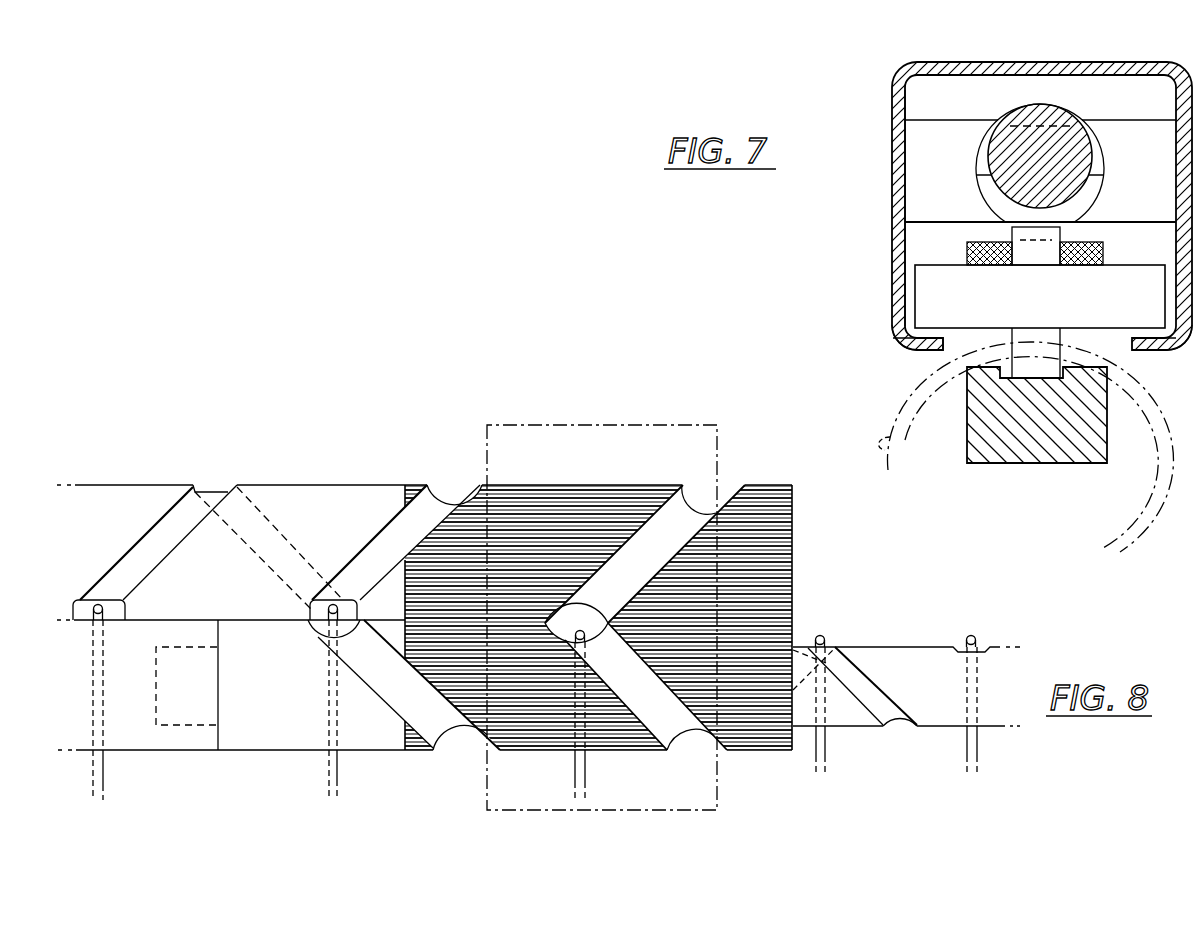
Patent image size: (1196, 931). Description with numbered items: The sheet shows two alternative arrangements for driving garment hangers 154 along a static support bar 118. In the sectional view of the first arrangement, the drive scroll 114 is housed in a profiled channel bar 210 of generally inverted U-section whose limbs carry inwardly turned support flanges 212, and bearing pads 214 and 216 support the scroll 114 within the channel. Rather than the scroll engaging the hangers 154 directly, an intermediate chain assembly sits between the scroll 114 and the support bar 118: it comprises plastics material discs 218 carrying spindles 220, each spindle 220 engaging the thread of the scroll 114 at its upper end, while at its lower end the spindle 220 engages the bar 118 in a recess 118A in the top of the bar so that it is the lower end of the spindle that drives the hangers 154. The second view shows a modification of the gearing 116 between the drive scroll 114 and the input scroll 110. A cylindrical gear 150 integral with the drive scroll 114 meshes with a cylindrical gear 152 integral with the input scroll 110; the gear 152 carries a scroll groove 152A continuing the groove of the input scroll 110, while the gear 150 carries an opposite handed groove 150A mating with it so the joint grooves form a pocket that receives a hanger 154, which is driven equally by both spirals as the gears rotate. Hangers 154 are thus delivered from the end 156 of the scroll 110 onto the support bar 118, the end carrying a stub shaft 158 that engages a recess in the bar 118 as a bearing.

In FIG. 8, the input scroll 110 is at (900, 655).
In FIG. 7, the drive scroll 114 is at (1000, 155).
In FIG. 8, the drive scroll 114 is at (297, 500).
In FIG. 8, the gearing 116 is at (426, 482).
In FIG. 7, the support bar 118 is at (970, 447).
In FIG. 8, the support bar 118 is at (122, 737).
In FIG. 7, the recess 118A is at (1040, 378).
In FIG. 8, the cylindrical gear 150 is at (730, 523).
In FIG. 8, the opposite handed groove 150A is at (663, 527).
In FIG. 8, the cylindrical gear 152 is at (770, 710).
In FIG. 8, the scroll groove 152A is at (642, 703).
In FIG. 7, the hangers 154 is at (1125, 518).
In FIG. 8, the hangers 154 is at (575, 782).
In FIG. 8, the end of the scroll 156 is at (240, 722).
In FIG. 8, the stub shaft 158 is at (197, 718).
In FIG. 7, the profiled channel bar 210 is at (912, 65).
In FIG. 7, the support flanges 212 is at (923, 355).
In FIG. 7, the bearing pad 214 is at (910, 195).
In FIG. 7, the bearing pad 216 is at (1122, 142).
In FIG. 7, the plastics material disc 218 is at (918, 283).
In FIG. 7, the spindle 220 is at (1018, 249).